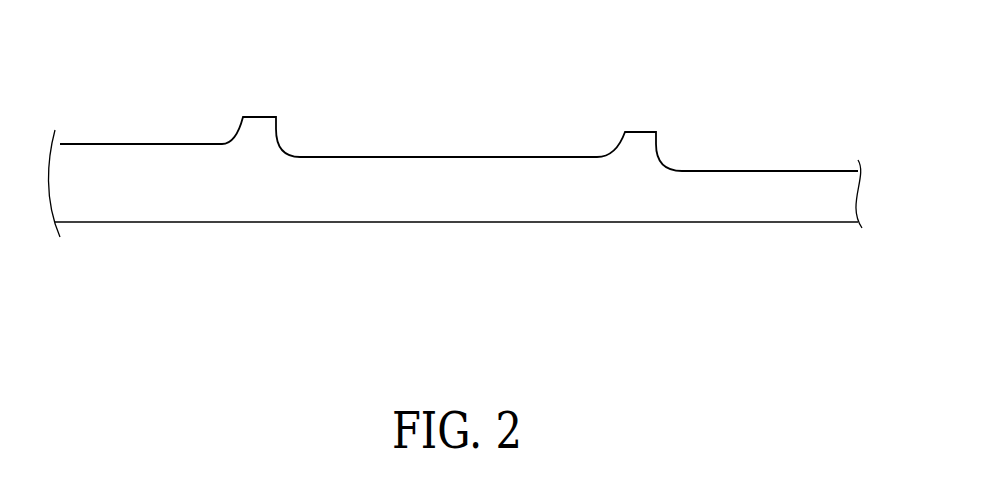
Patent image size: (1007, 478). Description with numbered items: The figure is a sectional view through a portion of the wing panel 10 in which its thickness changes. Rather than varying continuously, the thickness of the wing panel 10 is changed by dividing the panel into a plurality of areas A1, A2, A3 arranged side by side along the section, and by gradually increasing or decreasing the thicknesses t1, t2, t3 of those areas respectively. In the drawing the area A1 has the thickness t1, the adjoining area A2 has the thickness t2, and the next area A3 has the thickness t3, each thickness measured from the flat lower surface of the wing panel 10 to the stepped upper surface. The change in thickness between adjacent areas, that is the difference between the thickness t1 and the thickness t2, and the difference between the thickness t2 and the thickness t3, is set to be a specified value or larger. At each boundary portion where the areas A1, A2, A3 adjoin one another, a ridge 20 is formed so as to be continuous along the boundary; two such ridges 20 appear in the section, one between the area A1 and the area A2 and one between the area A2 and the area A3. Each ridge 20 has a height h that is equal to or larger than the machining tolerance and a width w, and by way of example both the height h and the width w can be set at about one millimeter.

The wing panel 10 is at (538, 228).
The ridge 20 is at (278, 118).
The area A1 is at (187, 144).
The area A2 is at (448, 157).
The area A3 is at (760, 171).
The thickness t1 is at (146, 146).
The thickness t2 is at (392, 159).
The thickness t3 is at (742, 173).
The height h is at (217, 92).
The width w is at (276, 112).